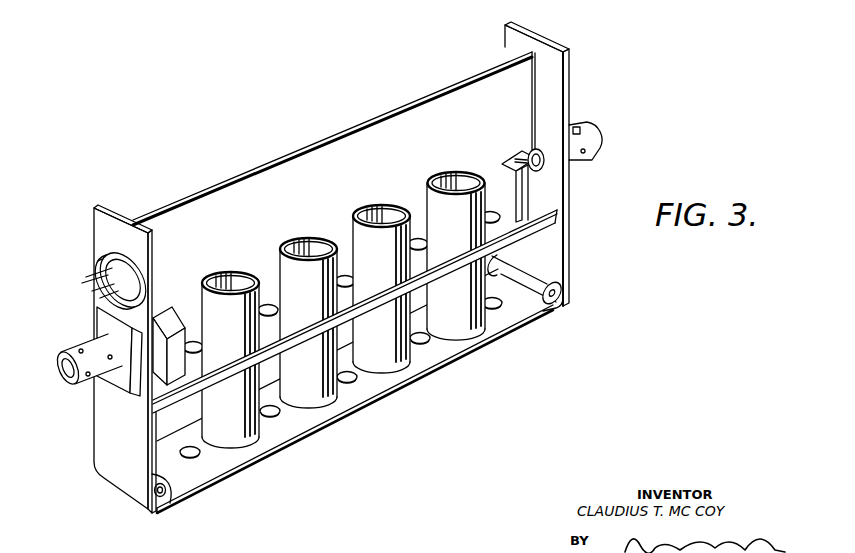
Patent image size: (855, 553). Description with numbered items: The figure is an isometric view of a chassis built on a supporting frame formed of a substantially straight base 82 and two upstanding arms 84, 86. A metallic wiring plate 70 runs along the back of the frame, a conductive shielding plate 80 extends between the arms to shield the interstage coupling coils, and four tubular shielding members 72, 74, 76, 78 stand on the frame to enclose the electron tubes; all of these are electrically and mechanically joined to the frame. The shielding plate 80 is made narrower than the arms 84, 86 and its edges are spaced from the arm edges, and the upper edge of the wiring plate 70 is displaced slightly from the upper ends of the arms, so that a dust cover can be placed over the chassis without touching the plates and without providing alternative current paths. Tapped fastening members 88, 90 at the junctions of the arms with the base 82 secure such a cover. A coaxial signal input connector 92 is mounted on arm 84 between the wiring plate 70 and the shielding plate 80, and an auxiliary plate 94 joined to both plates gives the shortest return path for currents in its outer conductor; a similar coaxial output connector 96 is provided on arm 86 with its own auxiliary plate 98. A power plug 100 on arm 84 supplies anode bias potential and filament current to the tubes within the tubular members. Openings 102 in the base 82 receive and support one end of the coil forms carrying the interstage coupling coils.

The metallic wiring plate 70 is at (352, 128).
The tubular shielding member 72 is at (248, 448).
The tubular shielding member 74 is at (323, 410).
The tubular shielding member 76 is at (403, 362).
The tubular shielding member 78 is at (473, 326).
The conductive shielding plate 80 is at (506, 232).
The base 82 is at (202, 488).
The upstanding arm 84 is at (105, 423).
The upstanding arm 86 is at (569, 228).
The tapped fastening member 88 is at (540, 300).
The tapped fastening member 90 is at (182, 497).
The coaxial signal input connector 92 is at (66, 349).
The auxiliary plate 94 is at (164, 340).
The coaxial output connector 96 is at (601, 136).
The auxiliary plate 98 is at (502, 183).
The power plug 100 is at (97, 269).
The openings 102 is at (495, 312).